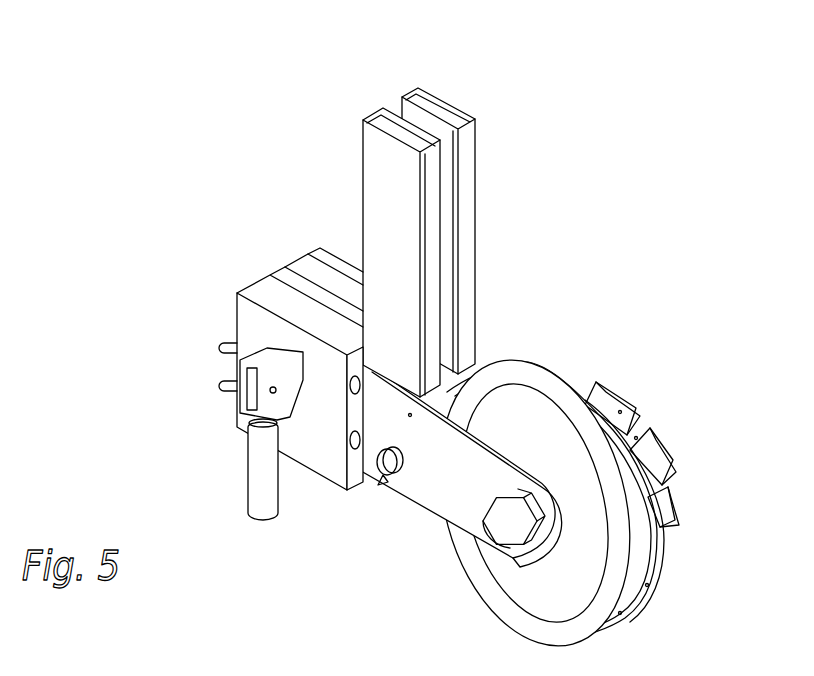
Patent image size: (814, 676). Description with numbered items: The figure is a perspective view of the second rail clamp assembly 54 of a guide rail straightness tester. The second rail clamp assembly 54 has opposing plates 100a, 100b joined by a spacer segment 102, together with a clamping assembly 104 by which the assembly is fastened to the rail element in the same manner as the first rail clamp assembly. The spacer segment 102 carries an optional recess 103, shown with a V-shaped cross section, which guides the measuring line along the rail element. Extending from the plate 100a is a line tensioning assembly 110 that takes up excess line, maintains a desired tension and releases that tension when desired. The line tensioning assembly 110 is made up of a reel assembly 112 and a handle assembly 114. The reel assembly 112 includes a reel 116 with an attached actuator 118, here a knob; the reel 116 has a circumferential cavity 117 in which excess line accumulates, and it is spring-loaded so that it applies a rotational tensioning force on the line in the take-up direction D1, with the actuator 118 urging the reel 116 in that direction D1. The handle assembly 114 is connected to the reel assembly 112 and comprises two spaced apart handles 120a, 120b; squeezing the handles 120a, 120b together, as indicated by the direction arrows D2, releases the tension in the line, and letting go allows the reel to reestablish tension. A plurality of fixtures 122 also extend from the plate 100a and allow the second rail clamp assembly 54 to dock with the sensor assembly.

The second rail clamp assembly 54 is at (704, 132).
The plate 100a is at (233, 316).
The plate 100b is at (283, 270).
The spacer segment 102 is at (277, 287).
The recess 103 is at (275, 278).
The clamping assembly 104 is at (280, 493).
The line tensioning assembly 110 is at (537, 367).
The reel assembly 112 is at (657, 538).
The handle assembly 114 is at (475, 200).
The reel 116 is at (608, 615).
The circumferential cavity 117 is at (625, 477).
The actuator 118 is at (638, 417).
The handle 120a is at (375, 110).
The handle 120b is at (412, 87).
The fixtures 122 is at (220, 385).
The take-up direction D1 is at (515, 466).
The direction arrows D2 is at (447, 102).